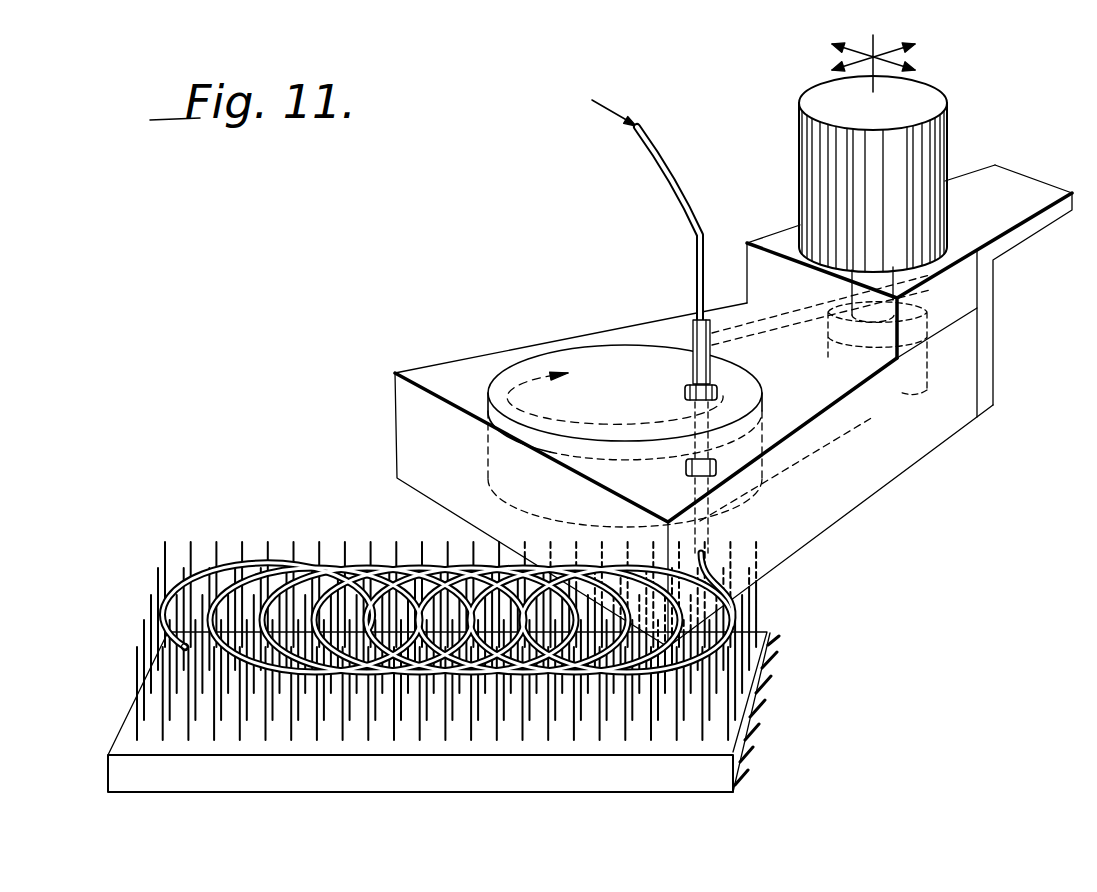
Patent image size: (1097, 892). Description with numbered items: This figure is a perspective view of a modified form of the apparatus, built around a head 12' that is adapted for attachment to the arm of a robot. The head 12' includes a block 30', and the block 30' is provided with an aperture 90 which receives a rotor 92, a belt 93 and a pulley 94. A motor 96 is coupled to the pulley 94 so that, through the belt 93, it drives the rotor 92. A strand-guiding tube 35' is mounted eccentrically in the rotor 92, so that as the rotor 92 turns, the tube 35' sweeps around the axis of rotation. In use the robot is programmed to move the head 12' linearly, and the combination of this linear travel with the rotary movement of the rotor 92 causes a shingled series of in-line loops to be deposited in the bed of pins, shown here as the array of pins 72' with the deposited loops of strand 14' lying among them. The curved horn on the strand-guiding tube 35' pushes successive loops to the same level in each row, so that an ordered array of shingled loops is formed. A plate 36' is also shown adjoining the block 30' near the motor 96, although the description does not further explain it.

The head 12' is at (926, 463).
The coiled web 14' is at (448, 584).
The block 30' is at (701, 475).
The strand-guiding tube 35' is at (654, 326).
The mounting plate 36' is at (1027, 291).
The pin bed 72' is at (443, 685).
The aperture 90 is at (777, 377).
The rotor 92 is at (647, 382).
The belt 93 is at (758, 323).
The pulley 94 is at (947, 280).
The motor 96 is at (910, 158).